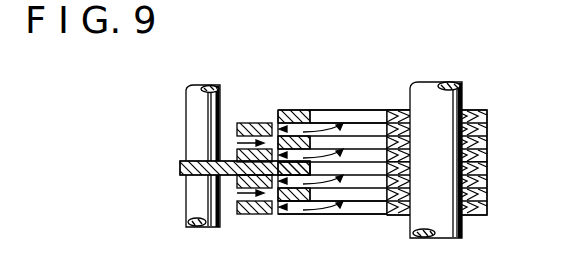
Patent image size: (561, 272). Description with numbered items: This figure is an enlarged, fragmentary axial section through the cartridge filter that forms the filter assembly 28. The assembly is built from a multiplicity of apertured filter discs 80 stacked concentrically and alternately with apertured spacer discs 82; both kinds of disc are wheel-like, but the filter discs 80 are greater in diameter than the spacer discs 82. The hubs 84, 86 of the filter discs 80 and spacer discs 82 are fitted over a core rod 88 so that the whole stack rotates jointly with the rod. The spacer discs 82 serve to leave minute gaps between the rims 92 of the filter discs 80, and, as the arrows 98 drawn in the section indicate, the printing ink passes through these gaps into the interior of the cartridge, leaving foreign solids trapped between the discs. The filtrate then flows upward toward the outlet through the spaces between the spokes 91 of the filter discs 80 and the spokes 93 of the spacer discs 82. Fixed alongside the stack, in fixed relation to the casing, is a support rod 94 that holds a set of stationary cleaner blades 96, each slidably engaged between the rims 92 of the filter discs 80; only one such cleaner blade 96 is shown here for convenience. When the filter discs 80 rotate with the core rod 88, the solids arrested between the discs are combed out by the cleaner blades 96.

The filter assembly 28 is at (355, 101).
The filter discs 80 is at (371, 216).
The spacer discs 82 is at (323, 110).
The hub 84 is at (485, 209).
The hub 86 is at (487, 115).
The core rod 88 is at (427, 97).
The spokes 91 is at (332, 210).
The rims 92 is at (244, 122).
The spokes 93 is at (378, 112).
The support rod 94 is at (196, 107).
The cleaner blade 96 is at (185, 168).
The flow passage 98 is at (297, 112).